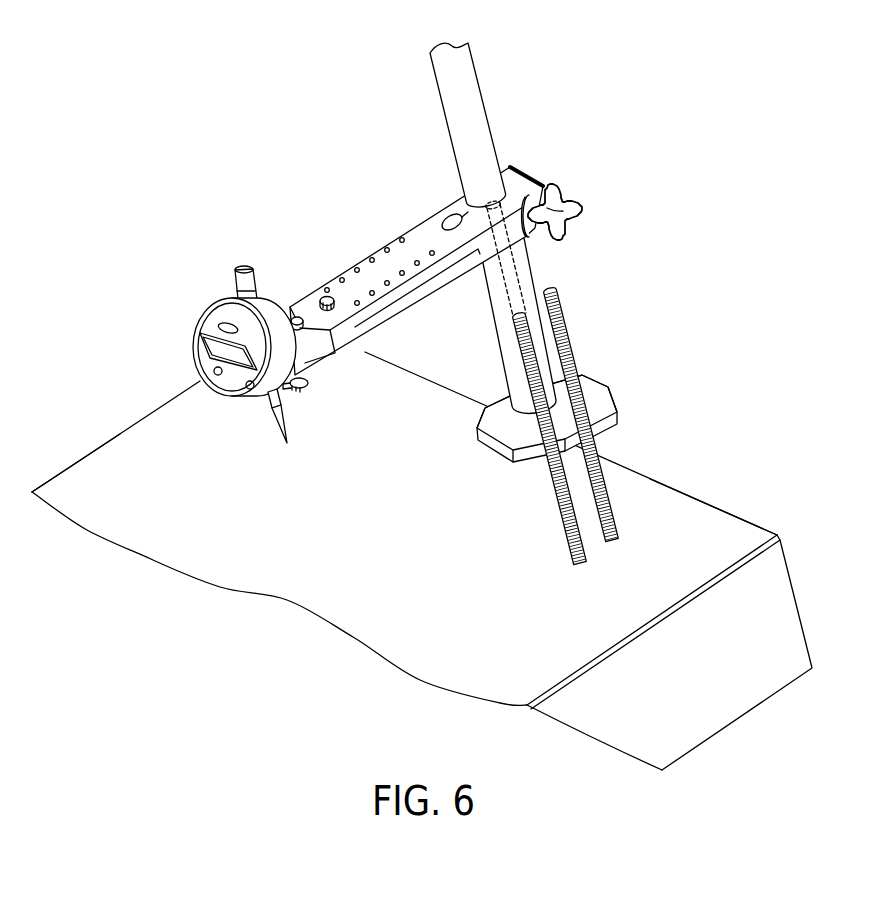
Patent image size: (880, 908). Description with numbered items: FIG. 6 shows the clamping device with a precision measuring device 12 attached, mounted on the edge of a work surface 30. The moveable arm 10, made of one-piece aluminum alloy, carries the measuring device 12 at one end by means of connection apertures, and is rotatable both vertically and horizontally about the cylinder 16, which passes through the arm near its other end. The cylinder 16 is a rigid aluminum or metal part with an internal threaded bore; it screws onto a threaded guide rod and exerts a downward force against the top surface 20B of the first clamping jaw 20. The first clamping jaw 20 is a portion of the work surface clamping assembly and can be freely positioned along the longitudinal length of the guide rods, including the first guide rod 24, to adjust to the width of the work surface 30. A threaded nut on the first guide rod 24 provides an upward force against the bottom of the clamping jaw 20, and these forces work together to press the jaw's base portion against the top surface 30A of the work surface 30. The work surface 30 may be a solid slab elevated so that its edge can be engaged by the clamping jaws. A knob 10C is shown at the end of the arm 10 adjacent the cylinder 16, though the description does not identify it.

The moveable arm 10 is at (319, 276).
The clamping knob 10C is at (560, 210).
The precision measuring device 12 is at (196, 373).
The cylinder 16 is at (478, 137).
The first clamping jaw 20 is at (638, 391).
The top surface 20B is at (507, 415).
The first guide rod 24 is at (572, 342).
The work surface 30 is at (733, 478).
The top surface 30A is at (380, 530).